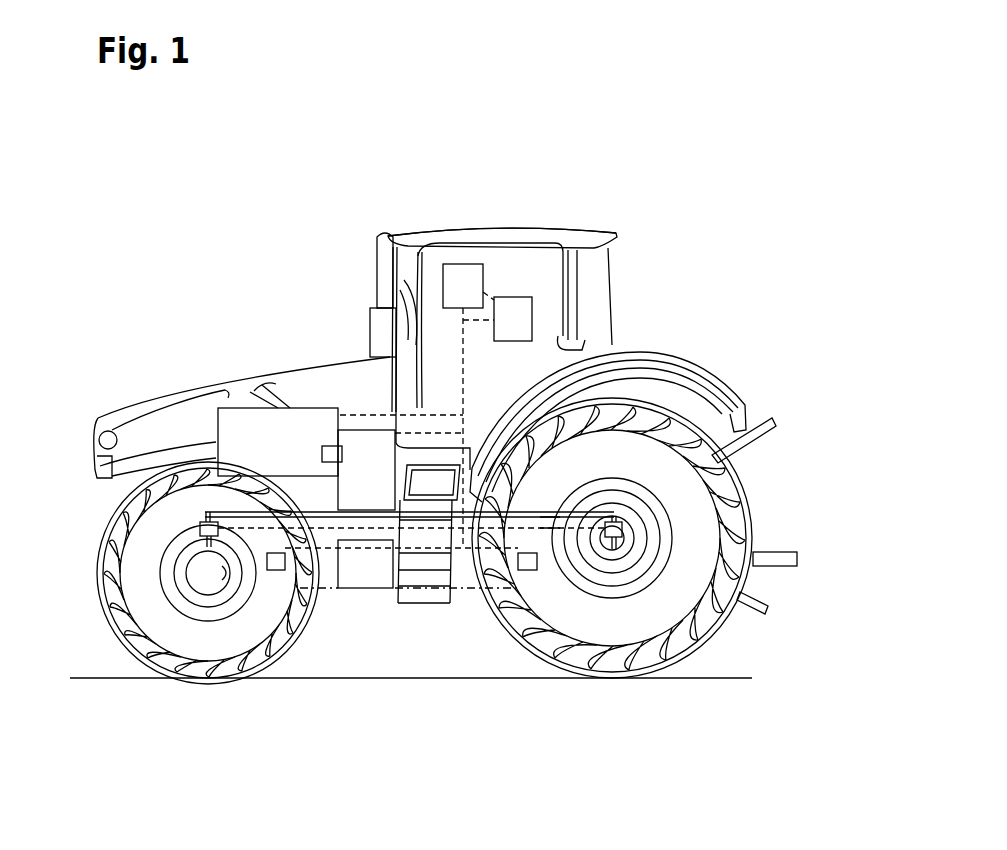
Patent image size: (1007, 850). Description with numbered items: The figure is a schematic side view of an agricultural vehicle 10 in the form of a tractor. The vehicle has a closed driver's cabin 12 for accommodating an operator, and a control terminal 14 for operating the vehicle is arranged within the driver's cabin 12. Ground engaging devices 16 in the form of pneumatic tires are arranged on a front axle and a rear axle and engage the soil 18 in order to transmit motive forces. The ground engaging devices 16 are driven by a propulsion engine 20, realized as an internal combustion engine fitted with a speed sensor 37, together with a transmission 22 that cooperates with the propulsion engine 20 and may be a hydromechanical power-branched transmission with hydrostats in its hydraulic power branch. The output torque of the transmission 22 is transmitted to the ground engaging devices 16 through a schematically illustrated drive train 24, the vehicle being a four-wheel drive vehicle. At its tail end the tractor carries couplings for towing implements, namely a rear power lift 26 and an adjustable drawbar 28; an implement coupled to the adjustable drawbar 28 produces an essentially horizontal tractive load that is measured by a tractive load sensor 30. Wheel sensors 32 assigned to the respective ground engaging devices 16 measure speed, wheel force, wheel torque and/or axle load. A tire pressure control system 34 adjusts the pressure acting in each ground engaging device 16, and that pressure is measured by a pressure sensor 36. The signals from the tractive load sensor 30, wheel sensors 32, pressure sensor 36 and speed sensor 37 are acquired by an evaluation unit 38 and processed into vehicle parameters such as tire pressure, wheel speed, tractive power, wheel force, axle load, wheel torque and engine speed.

The agricultural vehicle 10 is at (643, 117).
The driver's cabin 12 is at (516, 220).
The control terminal 14 is at (460, 275).
The ground engaging device 16 is at (201, 640).
The soil 18 is at (95, 678).
The propulsion engine 20 is at (235, 430).
The transmission 22 is at (365, 455).
The drive train 24 is at (546, 522).
The rear power lift 26 is at (772, 428).
The adjustable drawbar 28 is at (790, 562).
The tractive load sensor 30 is at (762, 556).
The wheel sensors 32 is at (200, 527).
The tire pressure control system 34 is at (360, 590).
The pressure sensor 36 is at (273, 572).
The speed sensor 37 is at (330, 446).
The evaluation unit 38 is at (520, 318).